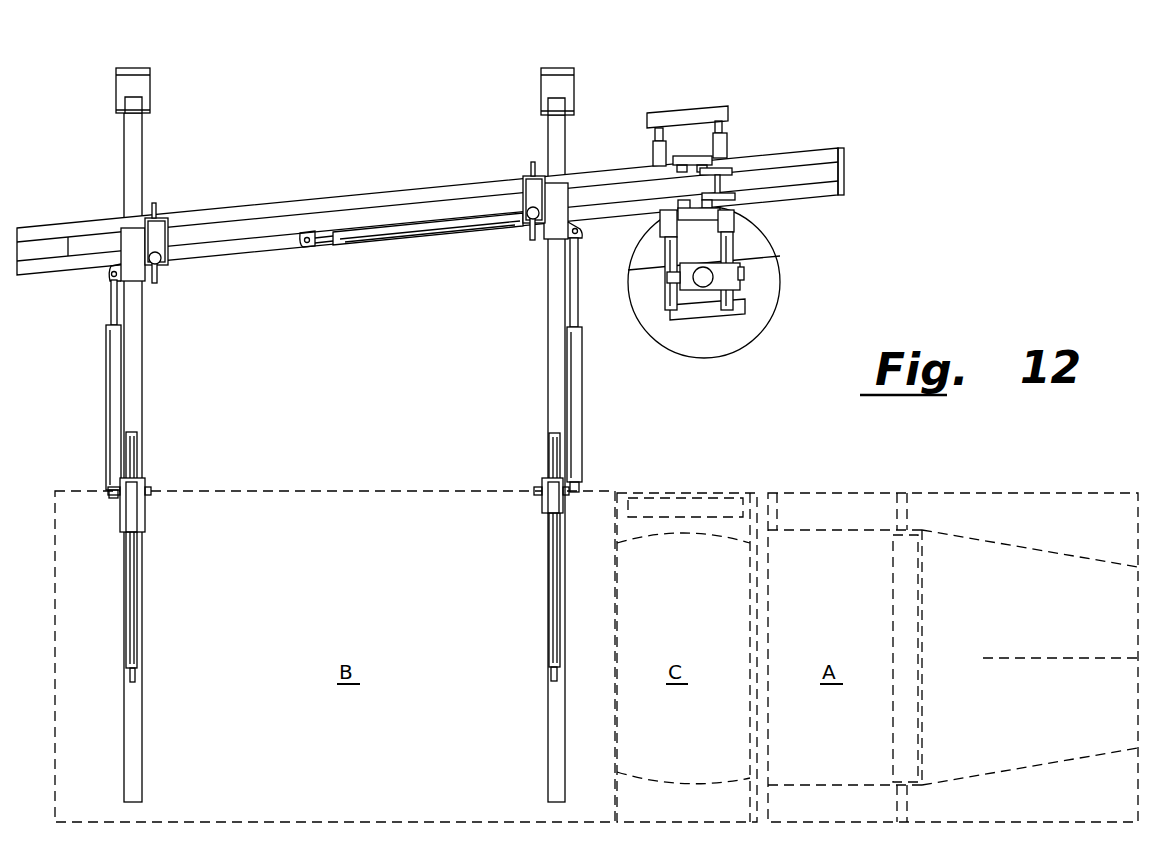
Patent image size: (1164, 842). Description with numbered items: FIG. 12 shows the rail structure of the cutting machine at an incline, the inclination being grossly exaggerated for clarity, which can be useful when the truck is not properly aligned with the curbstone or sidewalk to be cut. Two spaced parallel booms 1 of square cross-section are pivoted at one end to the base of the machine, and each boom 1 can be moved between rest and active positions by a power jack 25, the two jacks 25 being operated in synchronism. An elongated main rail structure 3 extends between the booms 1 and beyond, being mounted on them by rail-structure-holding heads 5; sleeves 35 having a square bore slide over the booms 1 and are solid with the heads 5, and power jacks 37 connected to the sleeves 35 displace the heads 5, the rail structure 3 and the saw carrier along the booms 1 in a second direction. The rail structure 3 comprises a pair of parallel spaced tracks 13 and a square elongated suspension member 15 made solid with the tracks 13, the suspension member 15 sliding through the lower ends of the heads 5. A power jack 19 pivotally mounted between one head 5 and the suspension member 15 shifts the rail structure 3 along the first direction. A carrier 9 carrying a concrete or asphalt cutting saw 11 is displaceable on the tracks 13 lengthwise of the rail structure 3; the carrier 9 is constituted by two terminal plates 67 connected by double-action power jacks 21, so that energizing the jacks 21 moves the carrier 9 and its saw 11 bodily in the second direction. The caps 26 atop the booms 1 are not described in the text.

The boom 1 is at (146, 170).
The main rail structure 3 is at (430, 205).
The rail-structure-holding head 5 is at (172, 224).
The carrier 9 is at (716, 218).
The cutting saw 11 is at (764, 297).
The rail track 13 is at (405, 196).
The suspension member 15 is at (271, 230).
The power jack 19 is at (378, 239).
The double-action power jack 21 is at (672, 229).
The power jack 25 is at (338, 557).
The post cap 26 is at (152, 92).
The sleeve 35 is at (558, 206).
The power jack 37 is at (574, 436).
The terminal plate 67 is at (728, 112).